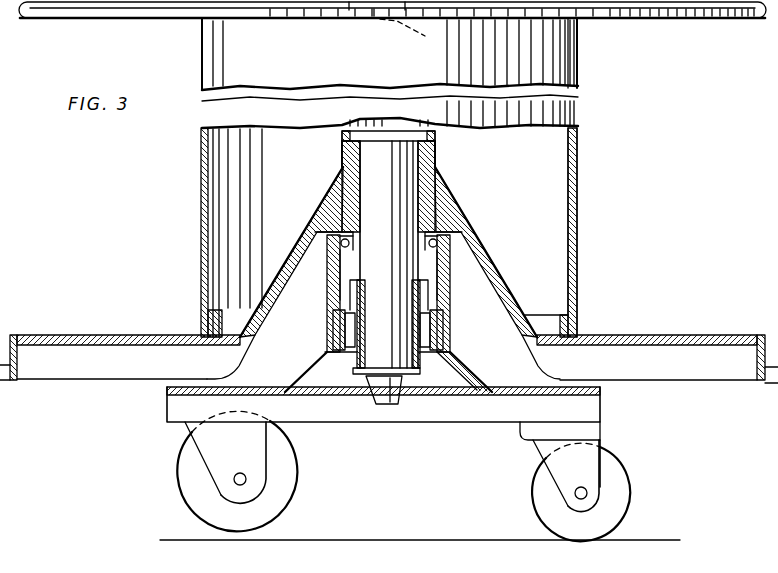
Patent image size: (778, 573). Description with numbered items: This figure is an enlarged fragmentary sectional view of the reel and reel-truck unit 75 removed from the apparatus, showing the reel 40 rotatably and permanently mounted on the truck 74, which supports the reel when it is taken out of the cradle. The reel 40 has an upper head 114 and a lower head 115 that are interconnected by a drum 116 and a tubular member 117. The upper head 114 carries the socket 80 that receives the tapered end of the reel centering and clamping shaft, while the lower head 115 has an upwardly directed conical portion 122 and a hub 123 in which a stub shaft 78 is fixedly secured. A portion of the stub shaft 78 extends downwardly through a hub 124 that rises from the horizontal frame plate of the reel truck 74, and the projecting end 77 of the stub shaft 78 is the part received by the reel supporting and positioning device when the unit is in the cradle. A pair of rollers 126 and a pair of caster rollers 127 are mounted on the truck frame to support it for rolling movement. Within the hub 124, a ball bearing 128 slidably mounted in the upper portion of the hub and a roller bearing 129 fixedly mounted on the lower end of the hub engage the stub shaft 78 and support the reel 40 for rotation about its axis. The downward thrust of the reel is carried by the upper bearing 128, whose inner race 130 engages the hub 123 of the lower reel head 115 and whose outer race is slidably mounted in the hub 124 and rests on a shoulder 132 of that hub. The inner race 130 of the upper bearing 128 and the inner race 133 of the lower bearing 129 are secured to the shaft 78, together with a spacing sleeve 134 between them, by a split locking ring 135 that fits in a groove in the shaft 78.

The upper head 114 is at (106, 18).
The socket 80 is at (400, 26).
The reel and reel-truck unit 75 is at (125, 184).
The reel 40 is at (590, 182).
The drum 116 is at (578, 213).
The tubular member 117 is at (342, 133).
The hub 123 is at (432, 188).
The stub shaft 78 is at (405, 213).
The inner race 130 is at (389, 254).
The conical portion 122 is at (487, 266).
The shoulder 132 is at (330, 243).
The ball bearing 128 is at (332, 249).
The hub 124 is at (320, 287).
The spacing sleeve 134 is at (352, 283).
The inner race 133 is at (367, 338).
The roller bearing 129 is at (334, 330).
The split locking ring 135 is at (352, 370).
The projecting end 77 is at (401, 384).
The lower head 115 is at (83, 338).
The truck 74 is at (165, 400).
The rollers 126 is at (178, 487).
The caster rollers 127 is at (631, 494).